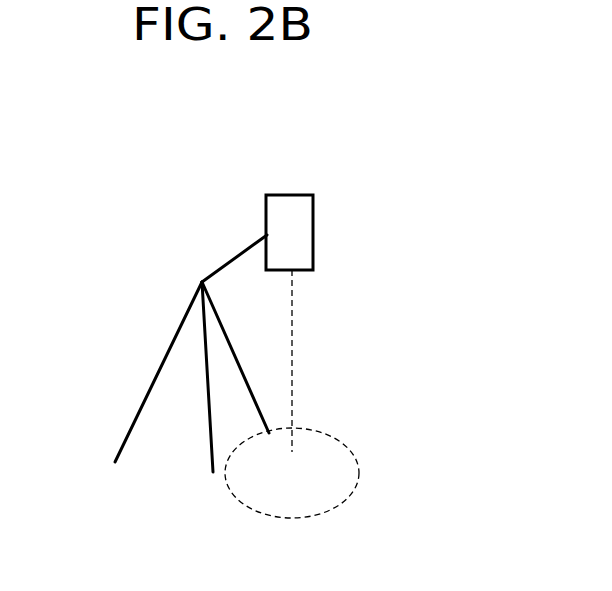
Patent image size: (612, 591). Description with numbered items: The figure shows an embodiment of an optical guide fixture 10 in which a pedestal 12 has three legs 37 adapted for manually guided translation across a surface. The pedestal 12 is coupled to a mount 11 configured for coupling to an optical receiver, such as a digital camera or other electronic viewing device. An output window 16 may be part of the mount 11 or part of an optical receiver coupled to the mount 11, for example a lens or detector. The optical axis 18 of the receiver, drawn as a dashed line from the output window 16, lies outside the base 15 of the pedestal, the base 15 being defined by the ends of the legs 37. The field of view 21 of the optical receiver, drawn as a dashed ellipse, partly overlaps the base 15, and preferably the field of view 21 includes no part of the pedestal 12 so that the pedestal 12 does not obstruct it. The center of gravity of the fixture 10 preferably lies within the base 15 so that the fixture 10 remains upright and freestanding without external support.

The fixture 10 is at (160, 284).
The mount 11 is at (313, 230).
The pedestal 12 is at (233, 257).
The base 15 is at (213, 472).
The output window 16 is at (305, 272).
The optical axis 18 is at (292, 368).
The field of view 21 is at (340, 475).
The legs 37 is at (145, 392).